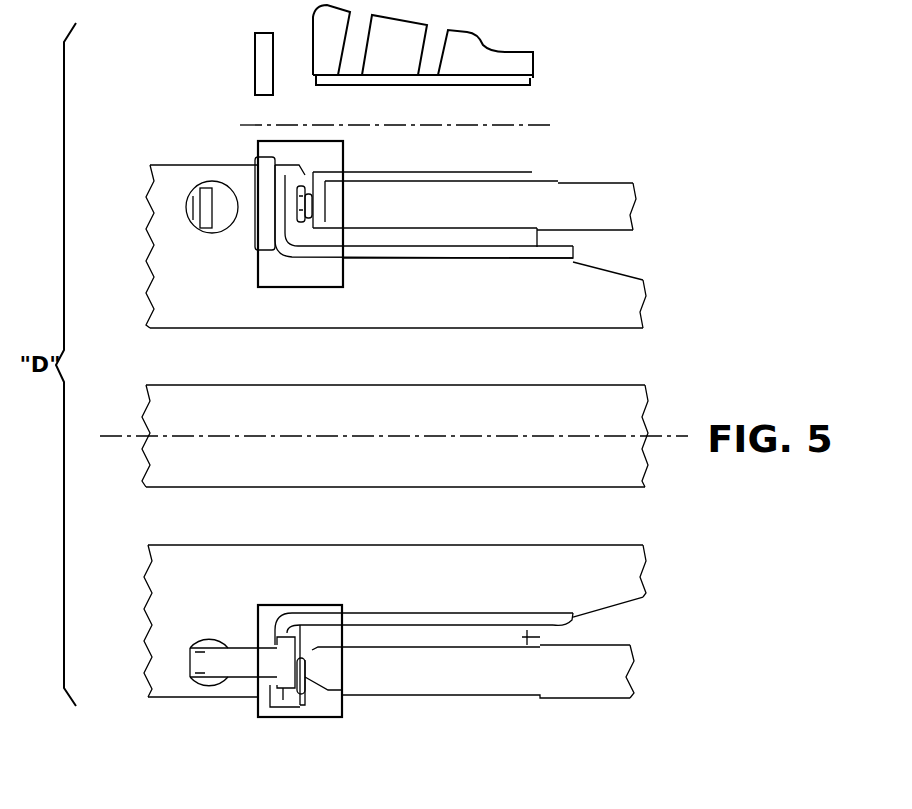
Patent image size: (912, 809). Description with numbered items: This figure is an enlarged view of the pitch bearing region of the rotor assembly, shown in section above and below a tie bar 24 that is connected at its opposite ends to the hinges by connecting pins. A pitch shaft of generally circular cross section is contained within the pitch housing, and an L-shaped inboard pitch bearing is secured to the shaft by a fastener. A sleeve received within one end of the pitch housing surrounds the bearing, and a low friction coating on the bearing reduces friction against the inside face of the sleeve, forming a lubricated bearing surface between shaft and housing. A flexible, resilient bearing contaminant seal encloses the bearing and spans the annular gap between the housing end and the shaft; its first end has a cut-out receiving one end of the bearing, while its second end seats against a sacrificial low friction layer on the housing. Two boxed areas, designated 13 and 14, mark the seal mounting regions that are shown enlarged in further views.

The detail area 13 is at (343, 281).
The detail area 14 is at (343, 605).
The tie bar 24 is at (175, 460).